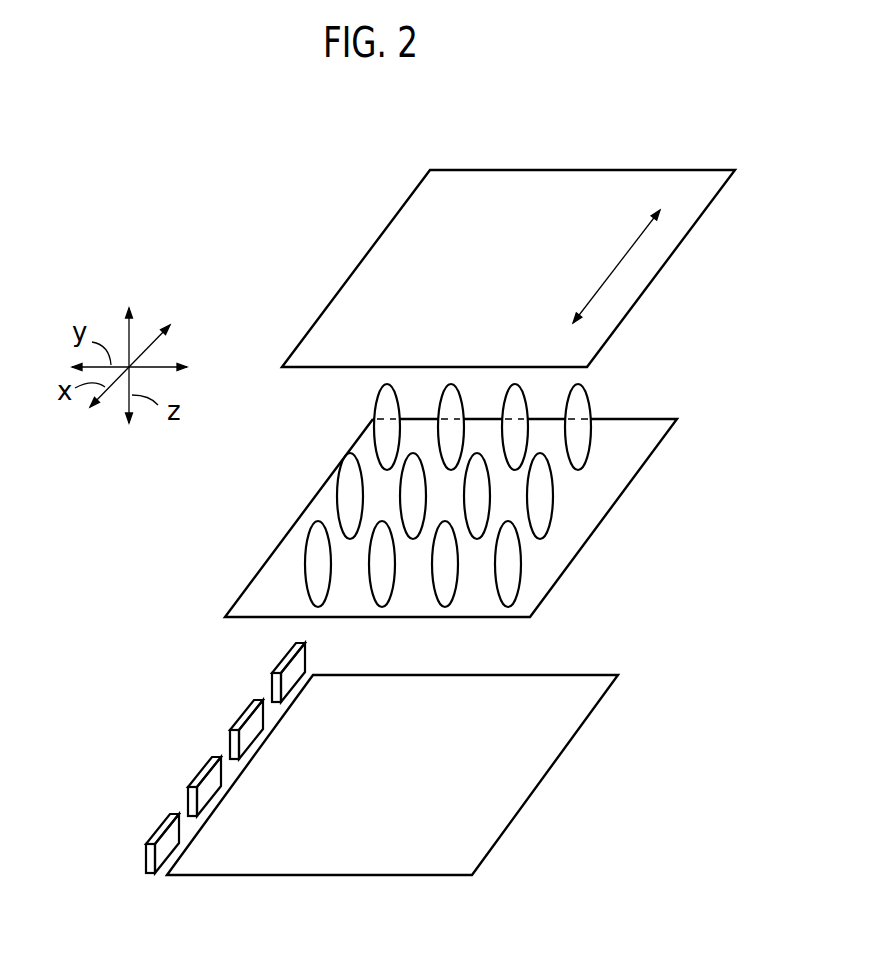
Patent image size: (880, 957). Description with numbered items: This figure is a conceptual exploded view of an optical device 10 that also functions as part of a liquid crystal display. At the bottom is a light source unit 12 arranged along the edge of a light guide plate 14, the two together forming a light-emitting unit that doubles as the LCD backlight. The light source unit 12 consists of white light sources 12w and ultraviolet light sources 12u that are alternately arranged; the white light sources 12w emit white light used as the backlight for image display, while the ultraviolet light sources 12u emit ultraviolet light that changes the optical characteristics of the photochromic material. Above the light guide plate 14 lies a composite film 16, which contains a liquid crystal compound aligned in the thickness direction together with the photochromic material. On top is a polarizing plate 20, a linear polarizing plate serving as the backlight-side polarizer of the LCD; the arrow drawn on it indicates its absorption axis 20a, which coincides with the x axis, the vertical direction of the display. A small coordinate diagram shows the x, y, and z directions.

The optical device 10 is at (292, 188).
The polarizing plate 20 is at (498, 268).
The absorption axis 20a is at (618, 268).
The composite film 16 is at (278, 479).
The light guide plate 14 is at (497, 787).
The light source unit 12 is at (123, 702).
The ultraviolet light source 12u is at (287, 662).
The white light source 12w is at (248, 715).